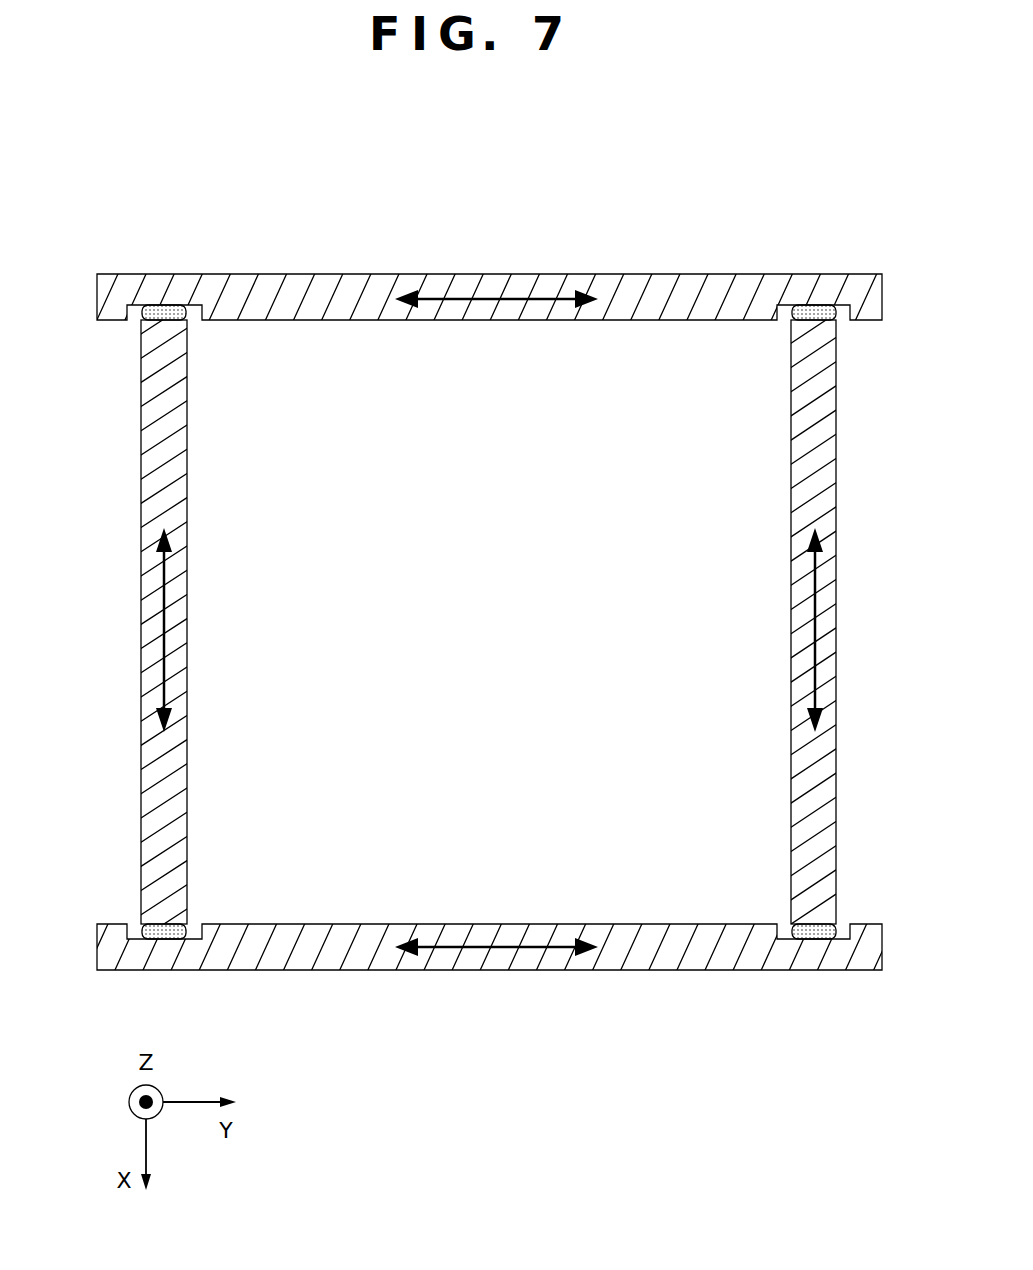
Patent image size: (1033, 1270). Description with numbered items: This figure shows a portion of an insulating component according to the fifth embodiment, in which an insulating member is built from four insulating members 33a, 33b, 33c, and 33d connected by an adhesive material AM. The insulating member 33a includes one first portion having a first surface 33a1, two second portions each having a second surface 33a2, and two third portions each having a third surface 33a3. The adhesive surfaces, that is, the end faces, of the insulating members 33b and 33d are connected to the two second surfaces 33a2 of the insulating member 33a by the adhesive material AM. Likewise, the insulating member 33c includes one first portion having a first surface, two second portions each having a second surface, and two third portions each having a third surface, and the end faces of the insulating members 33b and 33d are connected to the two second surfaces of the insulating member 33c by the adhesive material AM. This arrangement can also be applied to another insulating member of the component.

The insulating member 33a is at (542, 280).
The insulating member 33b is at (826, 468).
The insulating member 33c is at (685, 956).
The insulating member 33d is at (140, 448).
The first surface 33a1 is at (685, 321).
The second surface 33a2 is at (782, 307).
The third surface 33a3 is at (865, 321).
The adhesive material AM is at (186, 316).